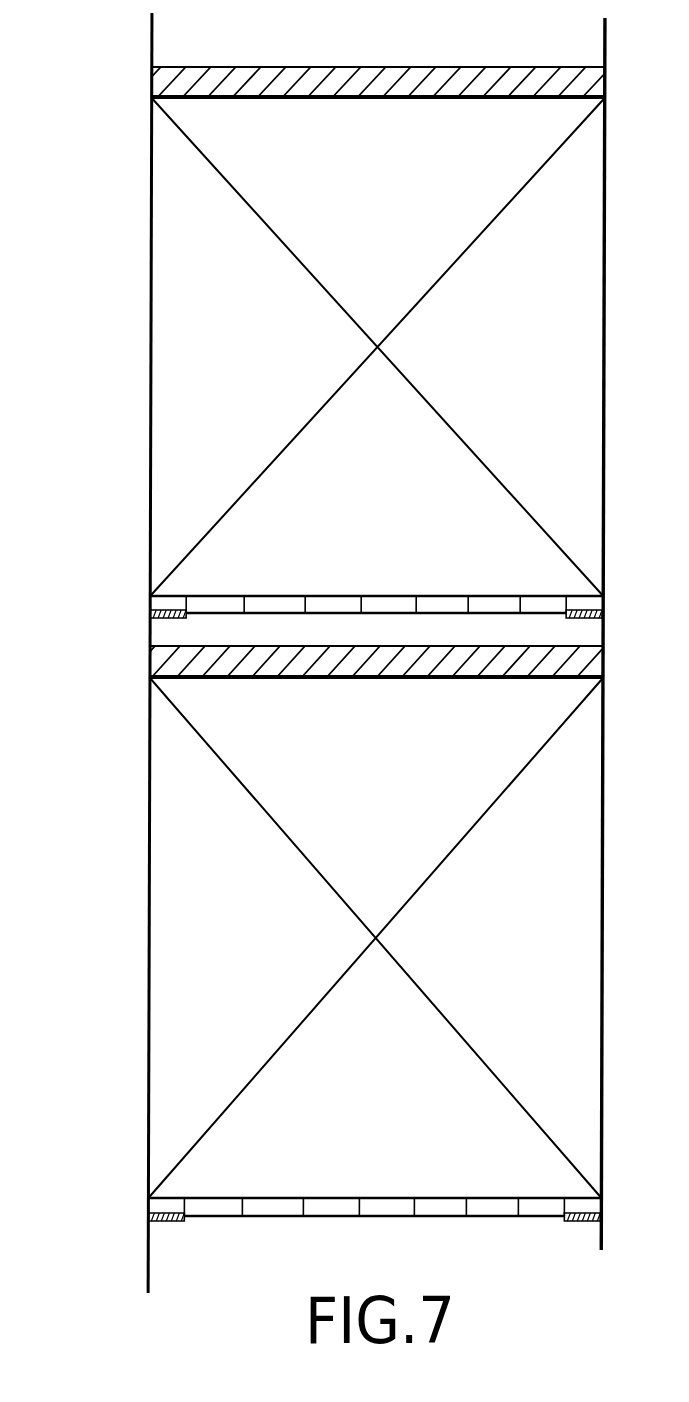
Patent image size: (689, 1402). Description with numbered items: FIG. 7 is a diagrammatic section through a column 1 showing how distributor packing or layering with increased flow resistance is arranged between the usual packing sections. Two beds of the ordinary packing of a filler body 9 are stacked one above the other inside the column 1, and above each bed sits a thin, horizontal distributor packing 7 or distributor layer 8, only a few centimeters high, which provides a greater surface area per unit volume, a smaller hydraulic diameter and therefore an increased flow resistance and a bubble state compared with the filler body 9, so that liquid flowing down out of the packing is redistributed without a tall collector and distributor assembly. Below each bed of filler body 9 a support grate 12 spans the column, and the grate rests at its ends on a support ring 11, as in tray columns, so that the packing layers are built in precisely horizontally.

The column 1 is at (152, 220).
The distributor packing 7 is at (152, 80).
The distributor layer 8 is at (181, 668).
The filler body 9 is at (180, 389).
The support ring 11 is at (152, 612).
The support grate 12 is at (262, 597).